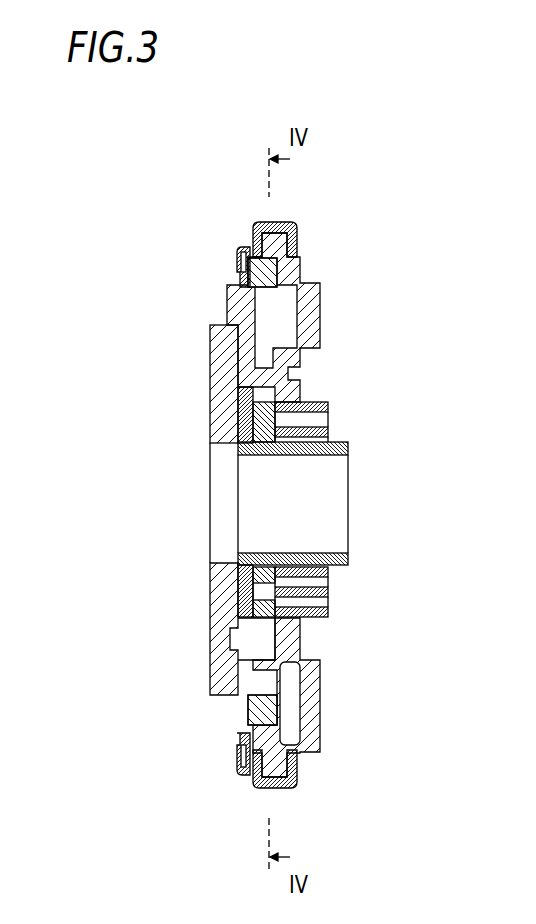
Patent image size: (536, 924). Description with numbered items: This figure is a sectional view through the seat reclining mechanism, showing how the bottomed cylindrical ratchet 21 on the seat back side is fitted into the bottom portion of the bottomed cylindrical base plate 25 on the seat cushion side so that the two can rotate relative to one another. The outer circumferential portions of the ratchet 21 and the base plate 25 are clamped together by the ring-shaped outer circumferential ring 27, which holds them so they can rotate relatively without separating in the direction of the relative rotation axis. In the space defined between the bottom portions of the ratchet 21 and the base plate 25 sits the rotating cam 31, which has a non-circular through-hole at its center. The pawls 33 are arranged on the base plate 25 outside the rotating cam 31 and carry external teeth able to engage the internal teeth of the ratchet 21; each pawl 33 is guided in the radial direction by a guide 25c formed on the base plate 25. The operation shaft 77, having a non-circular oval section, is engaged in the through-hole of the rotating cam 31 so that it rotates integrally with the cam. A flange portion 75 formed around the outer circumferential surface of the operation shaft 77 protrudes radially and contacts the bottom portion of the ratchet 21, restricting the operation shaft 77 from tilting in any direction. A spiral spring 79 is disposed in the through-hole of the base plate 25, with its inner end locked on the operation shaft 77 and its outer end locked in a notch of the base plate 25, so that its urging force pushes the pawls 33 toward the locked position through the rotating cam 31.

The ratchet 21 is at (223, 413).
The base plate 25 is at (307, 302).
The guide 25c is at (262, 368).
The outer circumferential ring 27 is at (290, 222).
The rotating cam 31 is at (242, 562).
The pawl 33 is at (245, 700).
The flange portion 75 is at (240, 600).
The operation shaft 77 is at (335, 453).
The spiral spring 79 is at (320, 403).